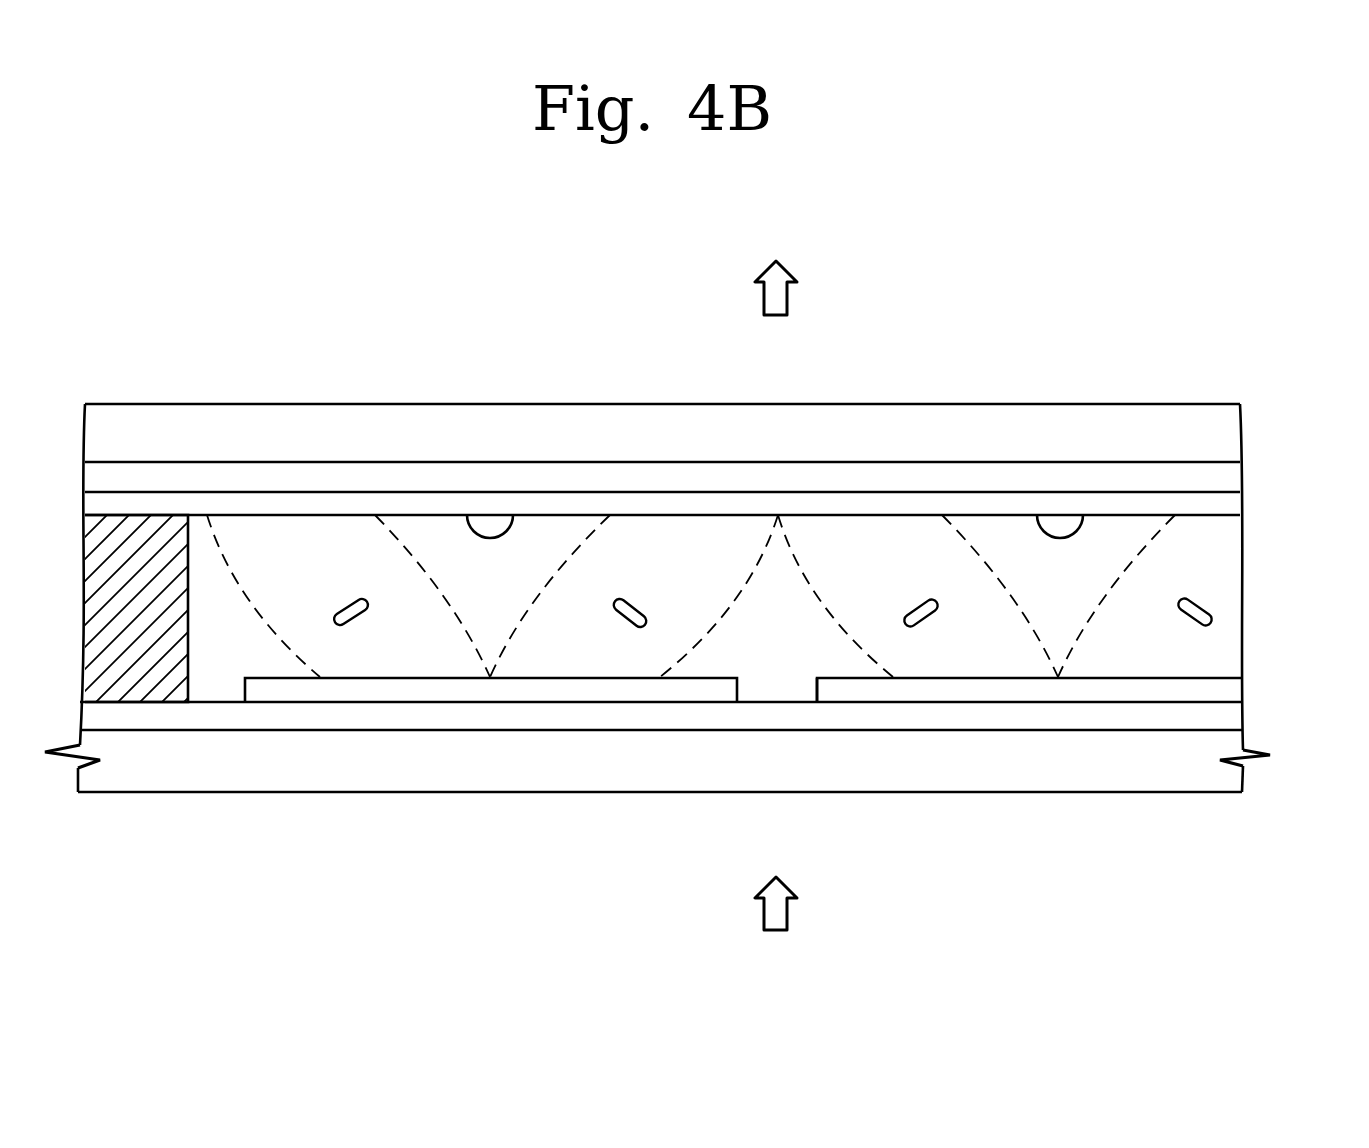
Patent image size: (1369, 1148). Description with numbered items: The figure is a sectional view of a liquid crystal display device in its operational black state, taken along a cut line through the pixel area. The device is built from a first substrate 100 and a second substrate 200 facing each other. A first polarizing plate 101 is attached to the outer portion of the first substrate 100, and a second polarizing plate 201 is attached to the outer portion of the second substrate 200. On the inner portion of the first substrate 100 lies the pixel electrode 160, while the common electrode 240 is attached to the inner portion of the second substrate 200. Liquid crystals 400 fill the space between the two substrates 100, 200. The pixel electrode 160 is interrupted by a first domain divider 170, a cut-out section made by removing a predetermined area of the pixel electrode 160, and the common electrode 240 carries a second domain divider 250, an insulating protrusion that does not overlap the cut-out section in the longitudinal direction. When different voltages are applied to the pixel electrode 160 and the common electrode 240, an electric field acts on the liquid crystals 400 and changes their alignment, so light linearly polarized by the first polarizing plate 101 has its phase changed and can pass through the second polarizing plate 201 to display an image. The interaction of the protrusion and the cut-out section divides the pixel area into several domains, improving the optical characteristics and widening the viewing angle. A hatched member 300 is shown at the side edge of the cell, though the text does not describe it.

The second polarizing plate 201 is at (1223, 432).
The second substrate 200 is at (1223, 470).
The common electrode 240 is at (1223, 505).
The second domain divider 250 is at (490, 524).
The liquid crystals 400 is at (346, 608).
The pixel electrode 160 is at (442, 695).
The first domain divider 170 is at (815, 690).
The first substrate 100 is at (1222, 720).
The first polarizing plate 101 is at (1222, 776).
The sealant / partition wall 300 is at (130, 695).